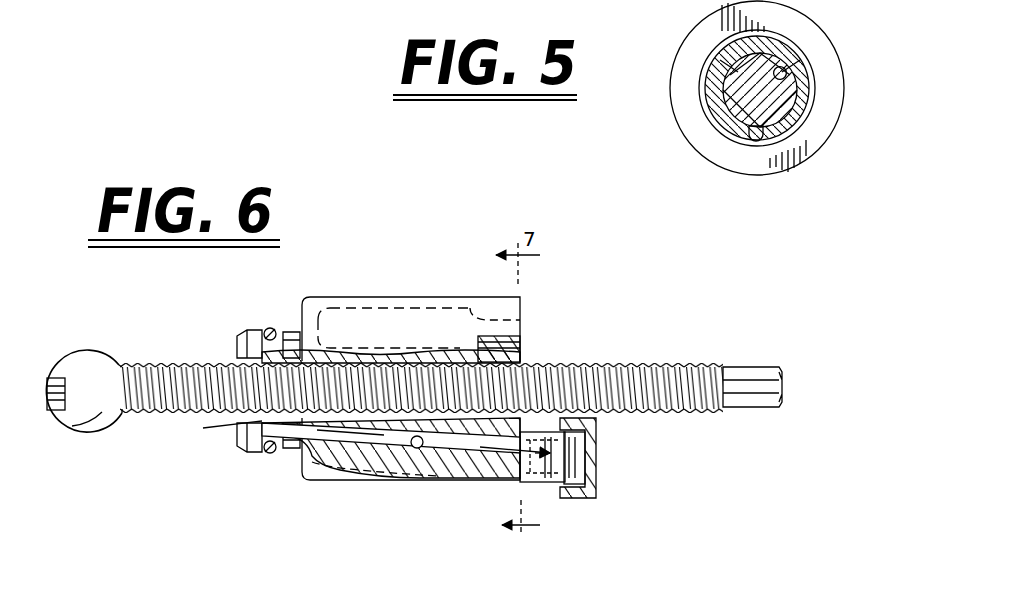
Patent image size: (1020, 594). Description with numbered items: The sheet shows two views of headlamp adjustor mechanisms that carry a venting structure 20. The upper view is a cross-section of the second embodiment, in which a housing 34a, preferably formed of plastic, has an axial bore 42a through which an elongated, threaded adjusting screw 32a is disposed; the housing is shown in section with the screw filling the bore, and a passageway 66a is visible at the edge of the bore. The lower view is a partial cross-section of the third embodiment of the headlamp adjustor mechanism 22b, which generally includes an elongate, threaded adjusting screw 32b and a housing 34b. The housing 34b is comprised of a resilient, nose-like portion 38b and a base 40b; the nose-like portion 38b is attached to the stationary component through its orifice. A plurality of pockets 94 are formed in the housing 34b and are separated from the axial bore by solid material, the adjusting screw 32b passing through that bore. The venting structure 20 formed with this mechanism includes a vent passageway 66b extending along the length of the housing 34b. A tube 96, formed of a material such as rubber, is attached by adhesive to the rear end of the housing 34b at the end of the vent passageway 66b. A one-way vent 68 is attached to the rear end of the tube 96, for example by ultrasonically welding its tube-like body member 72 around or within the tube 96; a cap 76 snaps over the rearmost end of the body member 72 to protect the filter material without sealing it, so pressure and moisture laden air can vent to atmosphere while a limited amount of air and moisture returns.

In FIG. 6, the venting structure 20 is at (594, 497).
In FIG. 6, the headlamp adjustor mechanism 22b is at (458, 486).
In FIG. 5, the adjusting screw 32a is at (752, 90).
In FIG. 6, the adjusting screw 32b is at (178, 416).
In FIG. 5, the housing 34a is at (798, 168).
In FIG. 6, the housing 34b is at (374, 293).
In FIG. 6, the nose-like portion 38b is at (262, 454).
In FIG. 6, the base 40b is at (365, 463).
In FIG. 5, the axial bore 42a is at (785, 70).
In FIG. 5, the finger 66a is at (754, 133).
In FIG. 6, the vent passageway 66b is at (420, 449).
In FIG. 6, the one-way vent 68 is at (606, 468).
In FIG. 6, the tube-like body member 72 is at (535, 484).
In FIG. 6, the cap 76 is at (600, 442).
In FIG. 6, the pockets 94 is at (520, 318).
In FIG. 6, the tube 96 is at (555, 484).